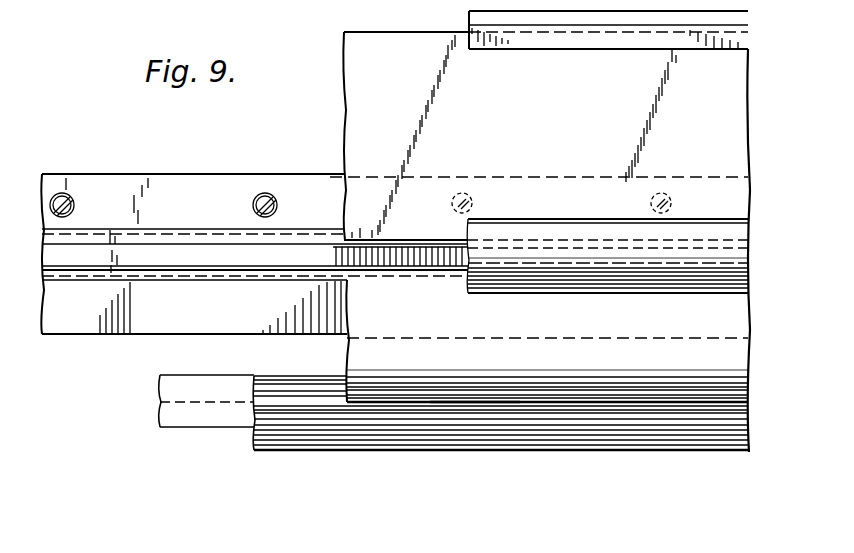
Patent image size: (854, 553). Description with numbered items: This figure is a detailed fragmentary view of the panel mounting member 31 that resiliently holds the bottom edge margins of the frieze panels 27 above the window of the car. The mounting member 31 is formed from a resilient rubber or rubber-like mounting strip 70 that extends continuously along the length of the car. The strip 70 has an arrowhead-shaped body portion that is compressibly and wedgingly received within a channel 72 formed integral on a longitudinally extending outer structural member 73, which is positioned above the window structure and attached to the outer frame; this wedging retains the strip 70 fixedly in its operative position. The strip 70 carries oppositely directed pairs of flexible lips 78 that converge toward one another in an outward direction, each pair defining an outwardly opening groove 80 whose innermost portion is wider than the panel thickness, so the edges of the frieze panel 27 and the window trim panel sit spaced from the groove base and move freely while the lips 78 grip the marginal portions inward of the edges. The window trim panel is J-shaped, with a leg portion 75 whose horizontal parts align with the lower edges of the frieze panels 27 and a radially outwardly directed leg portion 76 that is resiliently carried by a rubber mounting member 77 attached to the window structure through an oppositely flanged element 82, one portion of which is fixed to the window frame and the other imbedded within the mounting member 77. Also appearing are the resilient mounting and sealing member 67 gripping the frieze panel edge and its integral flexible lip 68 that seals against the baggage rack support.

The frieze panel 27 is at (570, 136).
The panel mounting member 31 is at (558, 216).
The resilient mounting and sealing member 67 is at (614, 43).
The flexible lip 68 is at (517, 18).
The mounting strip 70 is at (655, 258).
The channel 72 is at (204, 230).
The outer structural member 73 is at (168, 176).
The leg portion 75 is at (540, 363).
The radially outwardly directed leg portion 76 is at (478, 405).
The resilient mounting member 77 is at (382, 438).
The flexible lips 78 is at (703, 222).
The groove 80 is at (508, 245).
The oppositely flanged element 82 is at (180, 412).